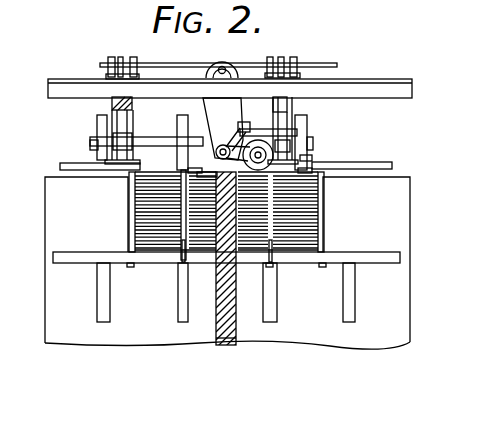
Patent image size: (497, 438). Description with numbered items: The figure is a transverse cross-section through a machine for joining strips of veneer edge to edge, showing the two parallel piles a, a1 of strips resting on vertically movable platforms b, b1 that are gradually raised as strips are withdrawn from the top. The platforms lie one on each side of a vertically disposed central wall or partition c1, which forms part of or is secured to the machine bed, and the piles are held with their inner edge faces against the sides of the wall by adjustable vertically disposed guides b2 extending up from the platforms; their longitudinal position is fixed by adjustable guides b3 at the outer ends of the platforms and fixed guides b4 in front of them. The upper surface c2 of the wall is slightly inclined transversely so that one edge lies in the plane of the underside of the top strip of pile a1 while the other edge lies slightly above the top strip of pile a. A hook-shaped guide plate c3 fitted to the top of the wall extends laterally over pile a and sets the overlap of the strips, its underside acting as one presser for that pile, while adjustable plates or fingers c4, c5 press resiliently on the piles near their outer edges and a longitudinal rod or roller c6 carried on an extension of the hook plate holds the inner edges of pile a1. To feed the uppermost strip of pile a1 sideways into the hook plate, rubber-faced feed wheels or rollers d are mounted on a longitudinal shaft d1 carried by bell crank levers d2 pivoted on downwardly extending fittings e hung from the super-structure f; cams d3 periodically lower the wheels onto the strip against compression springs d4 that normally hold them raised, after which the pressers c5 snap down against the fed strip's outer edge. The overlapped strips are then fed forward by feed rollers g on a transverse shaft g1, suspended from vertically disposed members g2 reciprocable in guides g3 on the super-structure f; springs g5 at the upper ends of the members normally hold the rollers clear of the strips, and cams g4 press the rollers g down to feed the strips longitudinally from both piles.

The super-structure f is at (66, 88).
The feed rollers g is at (100, 128).
The transverse shaft g1 is at (92, 145).
The vertically disposed members g2 is at (114, 100).
The guides g3 is at (113, 143).
The cams g4 is at (287, 105).
The springs g5 is at (120, 60).
The downwardly extending fittings e is at (250, 135).
The feed wheels or rollers d is at (273, 152).
The longitudinally disposed shaft d1 is at (278, 150).
The bell crank levers d2 is at (261, 155).
The cams d3 is at (242, 100).
The compression springs d4 is at (250, 140).
The pile of strips a is at (150, 213).
The pile of strips a1 is at (307, 211).
The vertically movable platform b is at (125, 258).
The vertically movable platform b1 is at (313, 258).
The adjustable vertically disposed guides b2 is at (131, 230).
The adjustable guides b3 is at (184, 245).
The fixed guides b4 is at (55, 228).
The wall or partition c1 is at (235, 345).
The upper surface of the wall c2 is at (218, 280).
The hook-shaped guide plate c3 is at (195, 178).
The adjustable presser plate or finger c4 is at (190, 170).
The adjustable presser plate or finger c5 is at (303, 173).
The rod or roller c6 is at (303, 158).